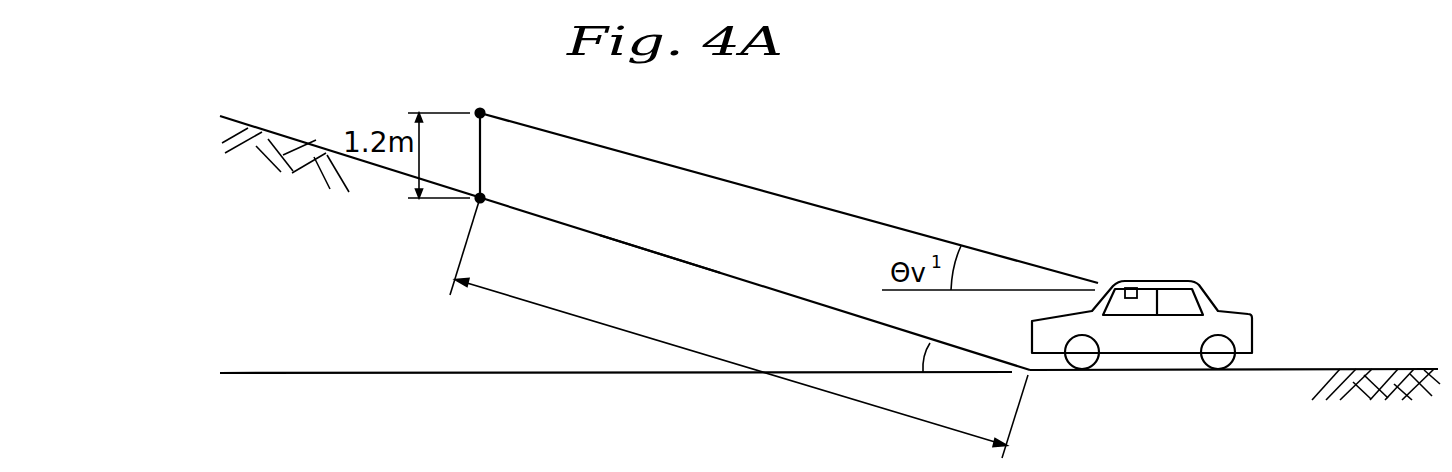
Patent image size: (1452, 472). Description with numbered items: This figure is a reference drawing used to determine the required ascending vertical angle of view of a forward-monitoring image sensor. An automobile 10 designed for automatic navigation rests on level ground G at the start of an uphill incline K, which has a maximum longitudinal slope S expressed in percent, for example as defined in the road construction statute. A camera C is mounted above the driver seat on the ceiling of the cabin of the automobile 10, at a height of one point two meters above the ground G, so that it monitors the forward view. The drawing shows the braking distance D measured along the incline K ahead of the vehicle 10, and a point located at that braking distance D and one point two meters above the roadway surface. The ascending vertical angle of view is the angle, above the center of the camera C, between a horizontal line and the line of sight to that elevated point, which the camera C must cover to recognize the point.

The automobile 10 is at (1221, 292).
The camera C is at (1129, 288).
The ground G is at (1367, 369).
The uphill incline K is at (668, 257).
The braking distance D is at (739, 328).
The maximum longitudinal slope S is at (910, 355).